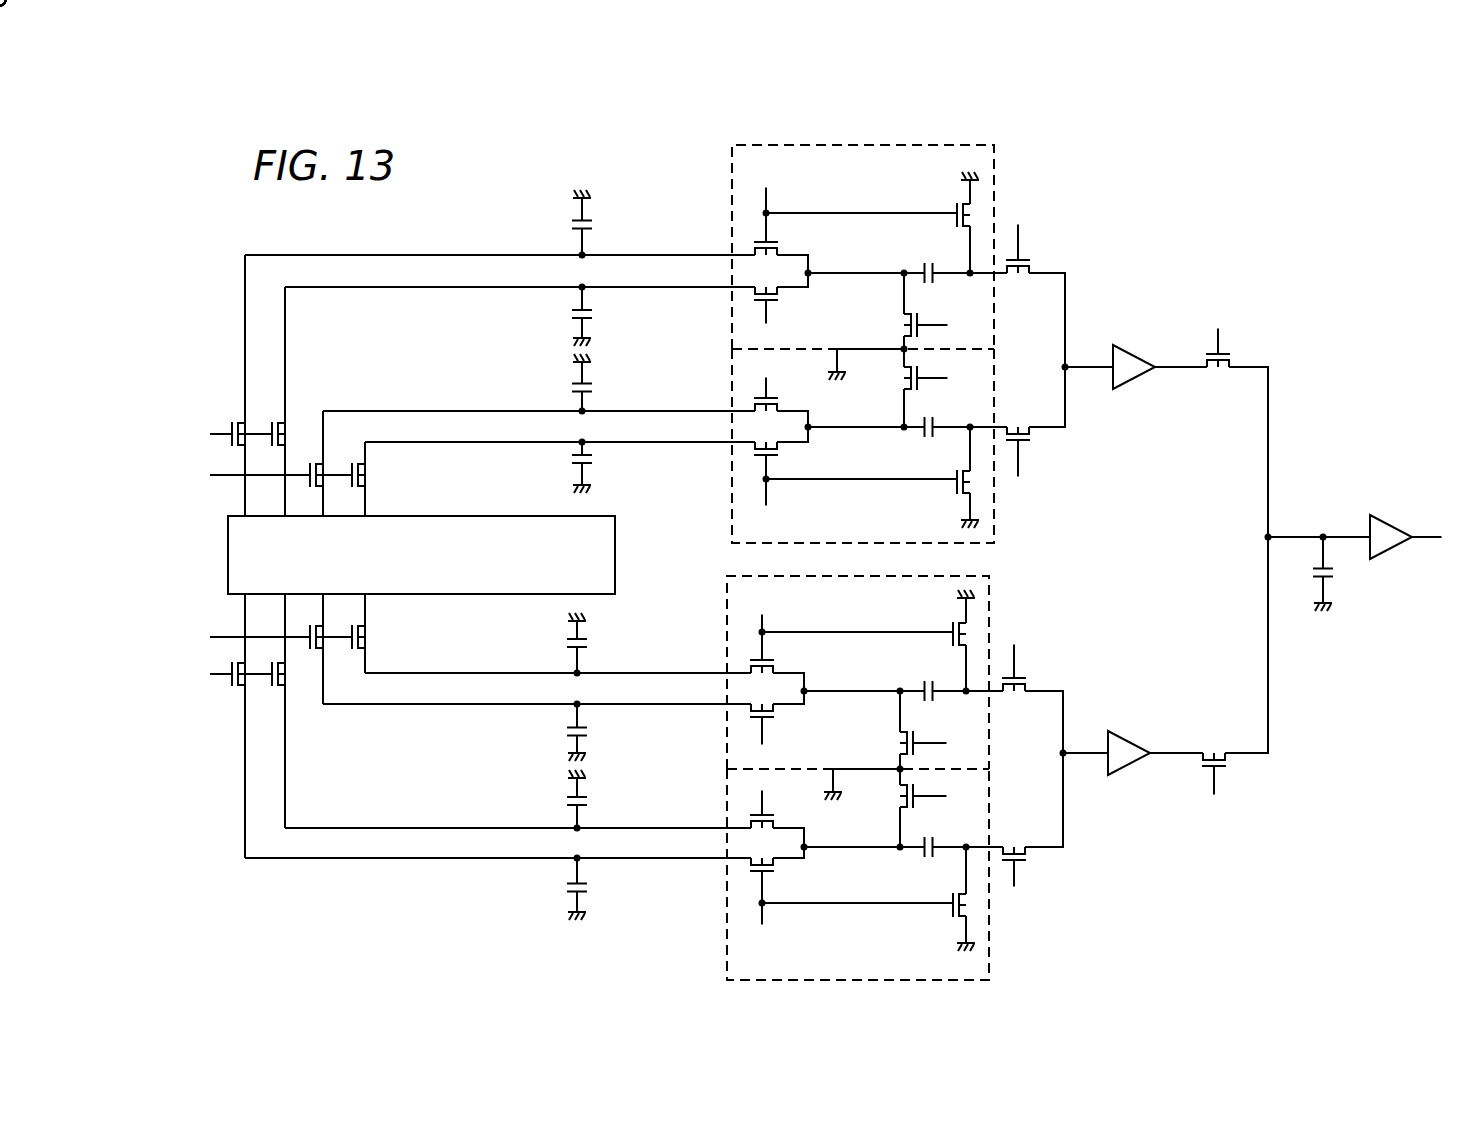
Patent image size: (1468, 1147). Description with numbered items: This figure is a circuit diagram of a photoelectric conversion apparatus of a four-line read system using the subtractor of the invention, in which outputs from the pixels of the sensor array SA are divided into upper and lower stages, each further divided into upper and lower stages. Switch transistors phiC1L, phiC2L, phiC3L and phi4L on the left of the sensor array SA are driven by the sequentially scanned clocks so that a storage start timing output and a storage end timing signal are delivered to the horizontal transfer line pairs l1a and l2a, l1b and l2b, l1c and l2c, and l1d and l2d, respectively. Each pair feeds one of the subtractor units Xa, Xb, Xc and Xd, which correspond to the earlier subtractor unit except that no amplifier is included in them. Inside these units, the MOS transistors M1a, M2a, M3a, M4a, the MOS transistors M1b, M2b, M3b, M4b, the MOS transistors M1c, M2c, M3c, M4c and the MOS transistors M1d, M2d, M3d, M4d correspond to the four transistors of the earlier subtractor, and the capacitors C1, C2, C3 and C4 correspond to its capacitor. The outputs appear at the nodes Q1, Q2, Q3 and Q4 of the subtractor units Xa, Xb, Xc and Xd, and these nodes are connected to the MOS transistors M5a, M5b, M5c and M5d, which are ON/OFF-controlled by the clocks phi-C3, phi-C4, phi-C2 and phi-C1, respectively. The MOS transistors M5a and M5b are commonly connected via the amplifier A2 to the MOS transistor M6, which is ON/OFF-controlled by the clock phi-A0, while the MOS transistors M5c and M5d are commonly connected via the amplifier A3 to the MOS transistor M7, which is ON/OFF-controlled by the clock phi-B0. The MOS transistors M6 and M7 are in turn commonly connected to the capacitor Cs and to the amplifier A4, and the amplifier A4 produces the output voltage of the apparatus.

The sensor array SA is at (421, 555).
The phi C1 controlled switch transistors phiC1L is at (217, 436).
The phi C2 controlled switch transistors phiC2L is at (257, 477).
The phi C3 controlled switch transistors phiC3L is at (257, 639).
The phi 4 controlled switch transistors phi4L is at (217, 676).
The horizontal transfer line l1a is at (500, 225).
The horizontal transfer line l2a is at (520, 315).
The horizontal transfer line l2b is at (539, 384).
The horizontal transfer line l1b is at (560, 466).
The horizontal transfer line l1c is at (558, 645).
The horizontal transfer line l2c is at (537, 731).
The horizontal transfer line l2d is at (518, 801).
The horizontal transfer line l1d is at (498, 888).
The subtractor unit Xa is at (732, 176).
The subtractor unit Xb is at (732, 362).
The subtractor unit Xc is at (727, 597).
The subtractor unit Xd is at (727, 791).
The MOS transistor M1a is at (410, 136).
The MOS transistor M2a is at (410, 174).
The MOS transistor M3a is at (872, 222).
The MOS transistor M4a is at (493, 180).
The MOS transistor M5a is at (538, 183).
The MOS transistor M1b is at (410, 269).
The MOS transistor M2b is at (410, 213).
The MOS transistor M3b is at (872, 477).
The MOS transistor M4b is at (493, 213).
The MOS transistor M5b is at (538, 260).
The MOS transistor M1c is at (408, 383).
The MOS transistor M2c is at (408, 345).
The MOS transistor M3c is at (868, 640).
The MOS transistor M4c is at (486, 394).
The MOS transistor M5c is at (535, 376).
The MOS transistor M1d is at (408, 423).
The MOS transistor M2d is at (408, 481).
The MOS transistor M3d is at (868, 899).
The MOS transistor M4d is at (486, 423).
The MOS transistor M5d is at (533, 466).
The capacitor C1 is at (888, 260).
The capacitor C2 is at (888, 412).
The capacitor C3 is at (884, 679).
The capacitor C4 is at (884, 866).
The node Q1 is at (968, 290).
The node Q2 is at (968, 416).
The node Q3 is at (966, 709).
The node Q4 is at (966, 847).
The amplifier A2 is at (1137, 352).
The amplifier A3 is at (1135, 741).
The amplifier A4 is at (1393, 522).
The MOS transistor M6 is at (634, 268).
The MOS transistor M7 is at (634, 421).
The capacitor Cs is at (1313, 573).